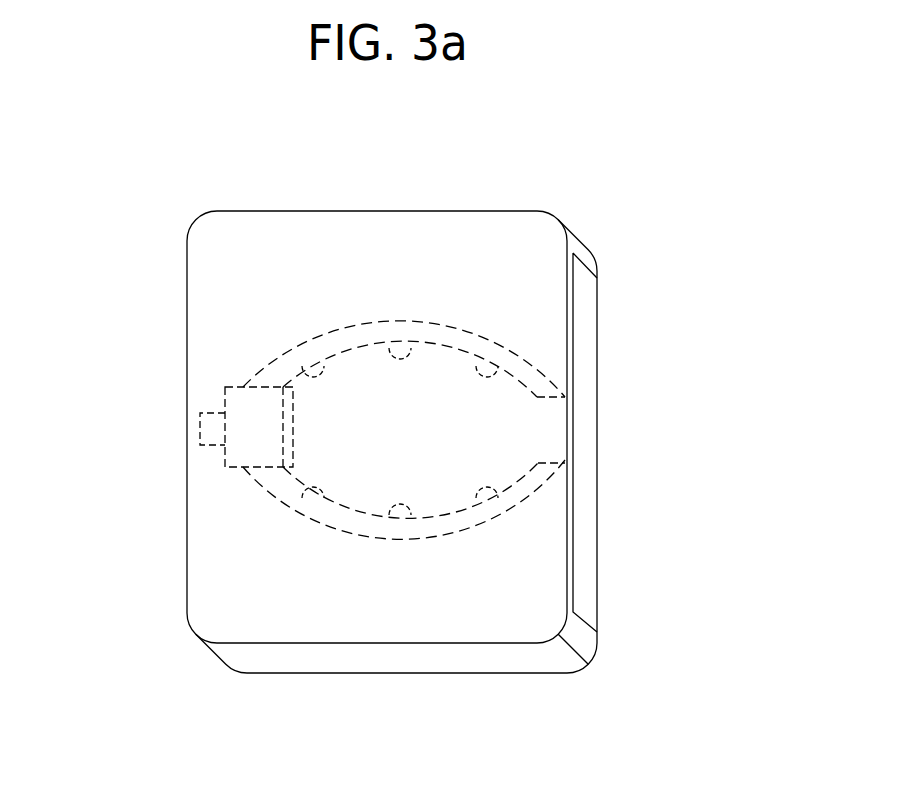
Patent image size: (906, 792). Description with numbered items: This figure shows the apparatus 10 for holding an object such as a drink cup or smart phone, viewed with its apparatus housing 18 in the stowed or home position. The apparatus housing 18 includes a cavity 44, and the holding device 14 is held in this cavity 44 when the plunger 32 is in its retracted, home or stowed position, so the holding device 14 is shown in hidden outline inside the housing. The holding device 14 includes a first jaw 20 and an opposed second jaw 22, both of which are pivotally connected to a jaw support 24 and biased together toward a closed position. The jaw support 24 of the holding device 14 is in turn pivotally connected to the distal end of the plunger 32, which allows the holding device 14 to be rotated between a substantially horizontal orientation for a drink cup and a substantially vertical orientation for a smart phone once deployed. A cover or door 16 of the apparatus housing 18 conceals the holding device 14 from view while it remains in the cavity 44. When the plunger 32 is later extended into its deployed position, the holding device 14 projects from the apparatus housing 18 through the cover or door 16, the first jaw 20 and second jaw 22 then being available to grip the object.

The apparatus 10 is at (650, 190).
The holding device 14 is at (545, 332).
The cover or door 16 is at (585, 573).
The apparatus housing 18 is at (462, 211).
The first jaw 20 is at (338, 326).
The second jaw 22 is at (397, 540).
The jaw support 24 is at (245, 455).
The plunger 32 is at (200, 434).
The cavity 44 is at (222, 614).